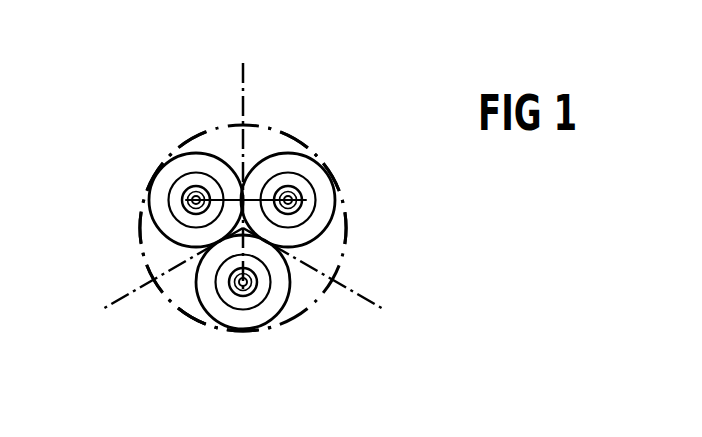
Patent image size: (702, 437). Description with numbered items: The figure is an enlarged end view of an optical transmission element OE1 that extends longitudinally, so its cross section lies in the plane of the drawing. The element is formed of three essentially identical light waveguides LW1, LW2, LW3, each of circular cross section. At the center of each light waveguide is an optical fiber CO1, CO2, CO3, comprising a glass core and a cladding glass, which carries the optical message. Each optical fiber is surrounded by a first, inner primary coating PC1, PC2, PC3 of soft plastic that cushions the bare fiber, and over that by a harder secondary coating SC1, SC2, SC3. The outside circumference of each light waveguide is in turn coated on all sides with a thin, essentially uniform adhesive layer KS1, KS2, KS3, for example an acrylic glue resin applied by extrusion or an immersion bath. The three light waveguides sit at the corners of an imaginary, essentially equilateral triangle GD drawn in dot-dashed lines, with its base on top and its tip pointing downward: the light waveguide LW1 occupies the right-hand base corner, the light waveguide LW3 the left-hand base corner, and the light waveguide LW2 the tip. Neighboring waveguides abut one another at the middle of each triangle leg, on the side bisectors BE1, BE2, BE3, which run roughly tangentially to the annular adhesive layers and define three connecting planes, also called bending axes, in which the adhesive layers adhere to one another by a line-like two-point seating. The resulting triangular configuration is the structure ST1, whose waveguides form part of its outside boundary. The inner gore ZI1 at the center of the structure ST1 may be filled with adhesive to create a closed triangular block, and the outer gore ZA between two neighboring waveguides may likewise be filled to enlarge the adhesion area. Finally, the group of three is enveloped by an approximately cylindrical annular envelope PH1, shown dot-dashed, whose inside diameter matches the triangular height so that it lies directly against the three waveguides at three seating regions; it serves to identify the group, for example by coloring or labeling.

The optical transmission element OE1 is at (505, 275).
The imaginary equilateral triangle GD is at (253, 172).
The outer gore ZA is at (248, 178).
The side bisector BE1 is at (375, 300).
The side bisector BE2 is at (141, 285).
The side bisector BE3 is at (241, 64).
The light waveguide LW1 is at (300, 158).
The light waveguide LW2 is at (262, 325).
The light waveguide LW3 is at (184, 198).
The optical fiber CO1 is at (325, 165).
The optical fiber CO2 is at (283, 280).
The optical fiber CO3 is at (168, 212).
The primary coating PC1 is at (318, 190).
The primary coating PC2 is at (273, 272).
The primary coating PC3 is at (178, 188).
The secondary coating SC1 is at (345, 227).
The secondary coating SC2 is at (242, 325).
The secondary coating SC3 is at (180, 156).
The adhesive layer KS1 is at (343, 237).
The adhesive layer KS2 is at (210, 323).
The adhesive layer KS3 is at (206, 129).
The inner gore ZI1 is at (165, 240).
The structure ST1 is at (170, 295).
The annular envelope PH1 is at (177, 309).